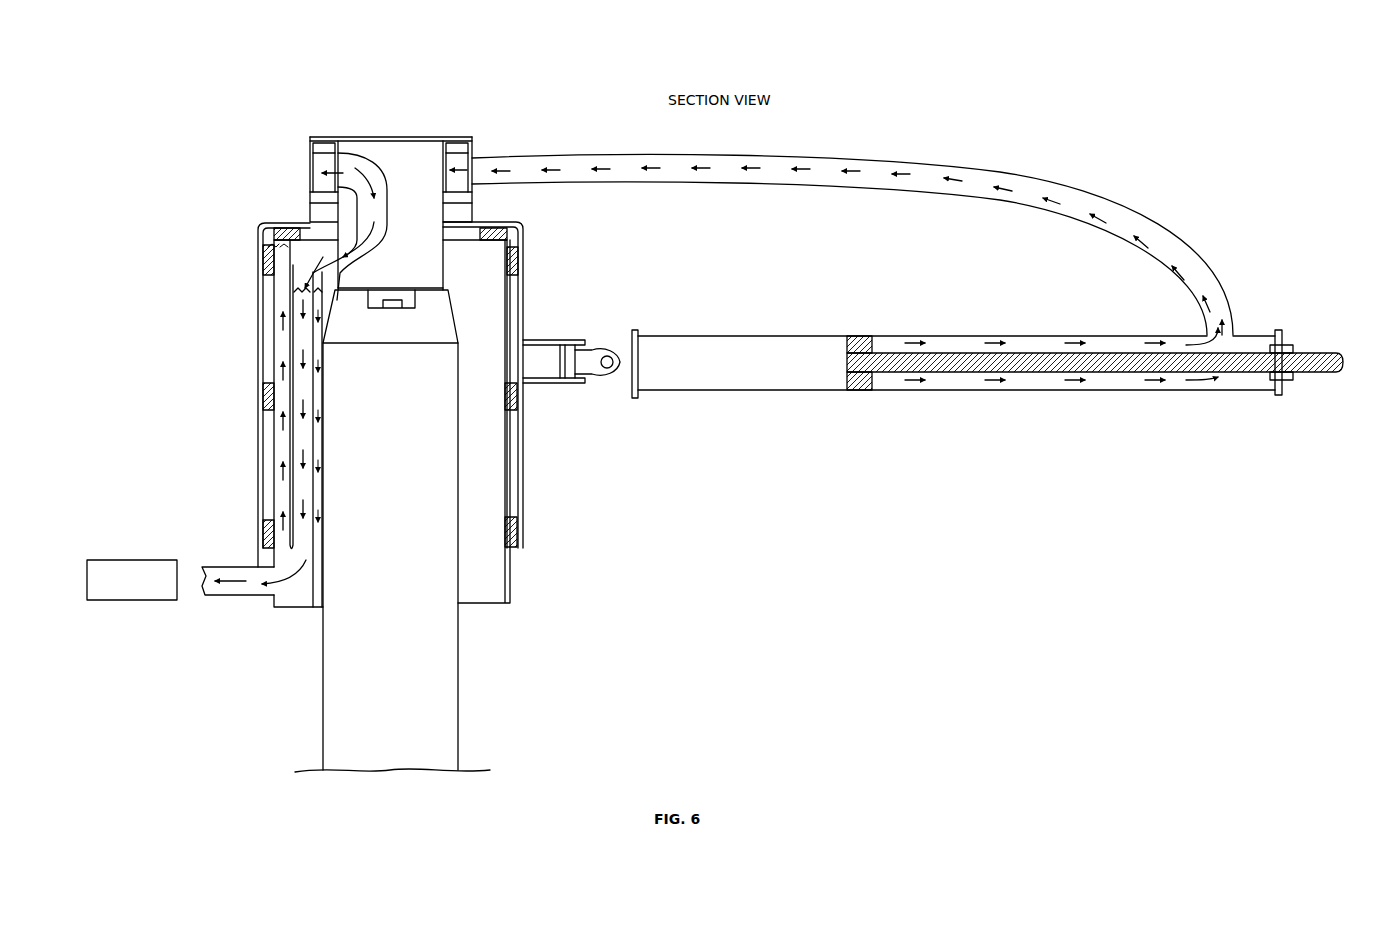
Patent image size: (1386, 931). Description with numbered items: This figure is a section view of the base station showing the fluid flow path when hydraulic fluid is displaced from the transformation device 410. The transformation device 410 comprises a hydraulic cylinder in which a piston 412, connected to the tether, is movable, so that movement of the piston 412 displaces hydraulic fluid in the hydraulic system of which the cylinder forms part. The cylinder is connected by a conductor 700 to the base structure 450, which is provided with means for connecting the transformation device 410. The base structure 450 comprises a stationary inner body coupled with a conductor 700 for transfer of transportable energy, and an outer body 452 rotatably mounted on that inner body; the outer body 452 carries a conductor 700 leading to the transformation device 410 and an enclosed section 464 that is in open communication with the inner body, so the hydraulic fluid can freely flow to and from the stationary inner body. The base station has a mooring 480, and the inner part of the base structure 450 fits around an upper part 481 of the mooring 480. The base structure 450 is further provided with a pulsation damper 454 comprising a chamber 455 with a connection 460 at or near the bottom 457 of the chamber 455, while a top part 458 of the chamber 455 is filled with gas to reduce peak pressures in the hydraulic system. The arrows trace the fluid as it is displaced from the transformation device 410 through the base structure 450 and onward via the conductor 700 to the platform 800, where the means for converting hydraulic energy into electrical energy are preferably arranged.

The base structure 450 is at (220, 108).
The outer body 452 is at (362, 135).
The pulsation damper 454 is at (250, 322).
The chamber 455 is at (280, 462).
The bottom 457 is at (302, 607).
The top part 458 is at (296, 246).
The connection 460 is at (262, 597).
The enclosed section 464 is at (310, 160).
The transformation device 410 is at (646, 305).
The piston 412 is at (858, 394).
The mooring 480 is at (470, 714).
The upper part 481 is at (397, 370).
The conductor 700 is at (1035, 178).
The platform 800 is at (132, 580).